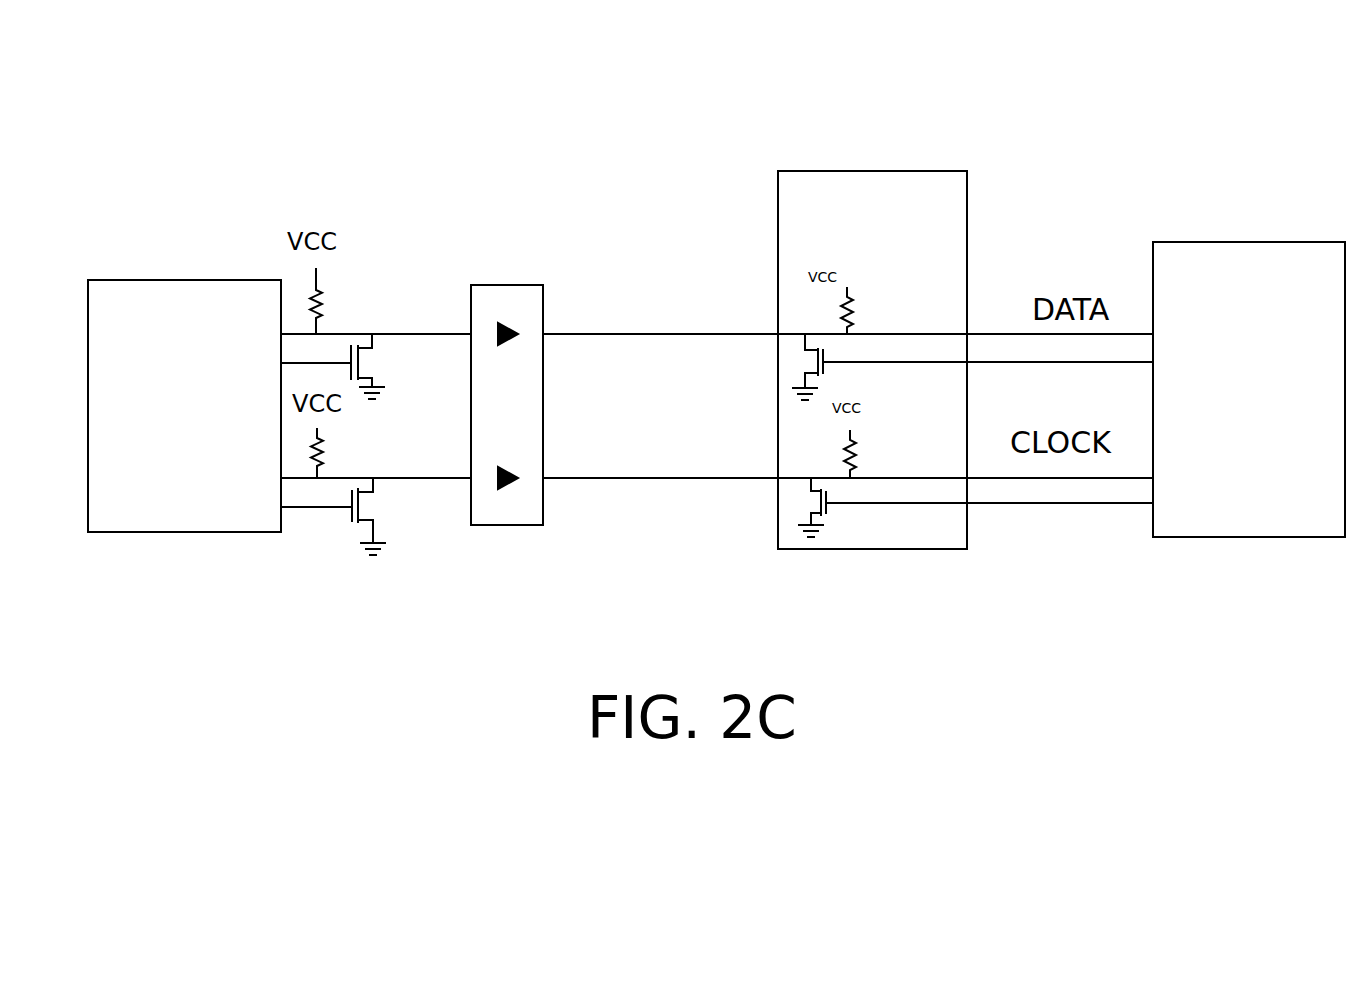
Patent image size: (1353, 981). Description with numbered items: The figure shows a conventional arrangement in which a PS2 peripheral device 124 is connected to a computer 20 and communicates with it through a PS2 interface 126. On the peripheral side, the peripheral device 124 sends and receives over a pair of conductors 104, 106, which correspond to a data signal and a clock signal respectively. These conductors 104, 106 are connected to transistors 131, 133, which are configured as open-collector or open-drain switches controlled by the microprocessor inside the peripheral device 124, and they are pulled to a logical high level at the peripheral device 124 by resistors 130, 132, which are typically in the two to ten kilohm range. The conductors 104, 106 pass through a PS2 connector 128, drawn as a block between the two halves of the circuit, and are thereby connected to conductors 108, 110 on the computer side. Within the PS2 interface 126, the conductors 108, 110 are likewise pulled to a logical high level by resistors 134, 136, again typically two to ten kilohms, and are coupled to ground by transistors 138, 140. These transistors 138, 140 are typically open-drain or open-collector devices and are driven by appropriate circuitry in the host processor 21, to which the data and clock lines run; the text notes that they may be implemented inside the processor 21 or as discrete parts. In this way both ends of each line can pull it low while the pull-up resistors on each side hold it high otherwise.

The computer 20 is at (1125, 138).
The processor 21 is at (1249, 389).
The conductor 104 is at (425, 333).
The conductor 106 is at (462, 478).
The conductor 108 is at (603, 333).
The conductor 110 is at (588, 480).
The peripheral device 124 is at (184, 406).
The PS2 interface 126 is at (872, 360).
The PS2 connector 128 is at (512, 526).
The resistor 130 is at (320, 310).
The transistor 131 is at (365, 368).
The resistor 132 is at (323, 460).
The transistor 133 is at (365, 523).
The resistor 134 is at (857, 312).
The resistor 136 is at (842, 447).
The transistor 138 is at (812, 373).
The transistor 140 is at (808, 506).